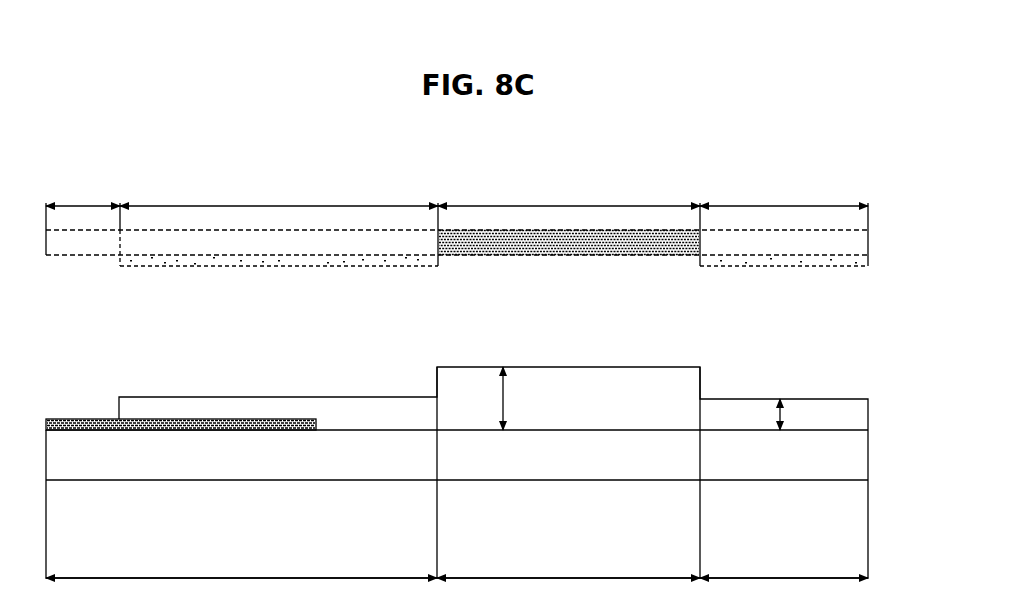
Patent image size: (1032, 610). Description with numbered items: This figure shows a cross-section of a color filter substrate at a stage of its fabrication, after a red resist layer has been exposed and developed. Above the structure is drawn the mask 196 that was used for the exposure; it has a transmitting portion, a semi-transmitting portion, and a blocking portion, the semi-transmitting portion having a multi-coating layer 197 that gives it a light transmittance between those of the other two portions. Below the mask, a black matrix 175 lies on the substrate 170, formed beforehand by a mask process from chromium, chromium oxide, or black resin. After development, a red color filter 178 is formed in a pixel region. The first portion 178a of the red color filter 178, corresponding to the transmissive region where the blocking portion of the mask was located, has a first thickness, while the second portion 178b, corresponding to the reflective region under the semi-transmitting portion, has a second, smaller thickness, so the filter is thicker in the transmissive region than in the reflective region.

The mask 196 is at (475, 223).
The multi-coating layer 197 is at (218, 261).
The substrate 170 is at (457, 472).
The black matrix 175 is at (242, 431).
The red color filter 178 is at (652, 462).
The first portion of the red color filter 178a is at (568, 419).
The second portion of the red color filter 178b is at (732, 420).